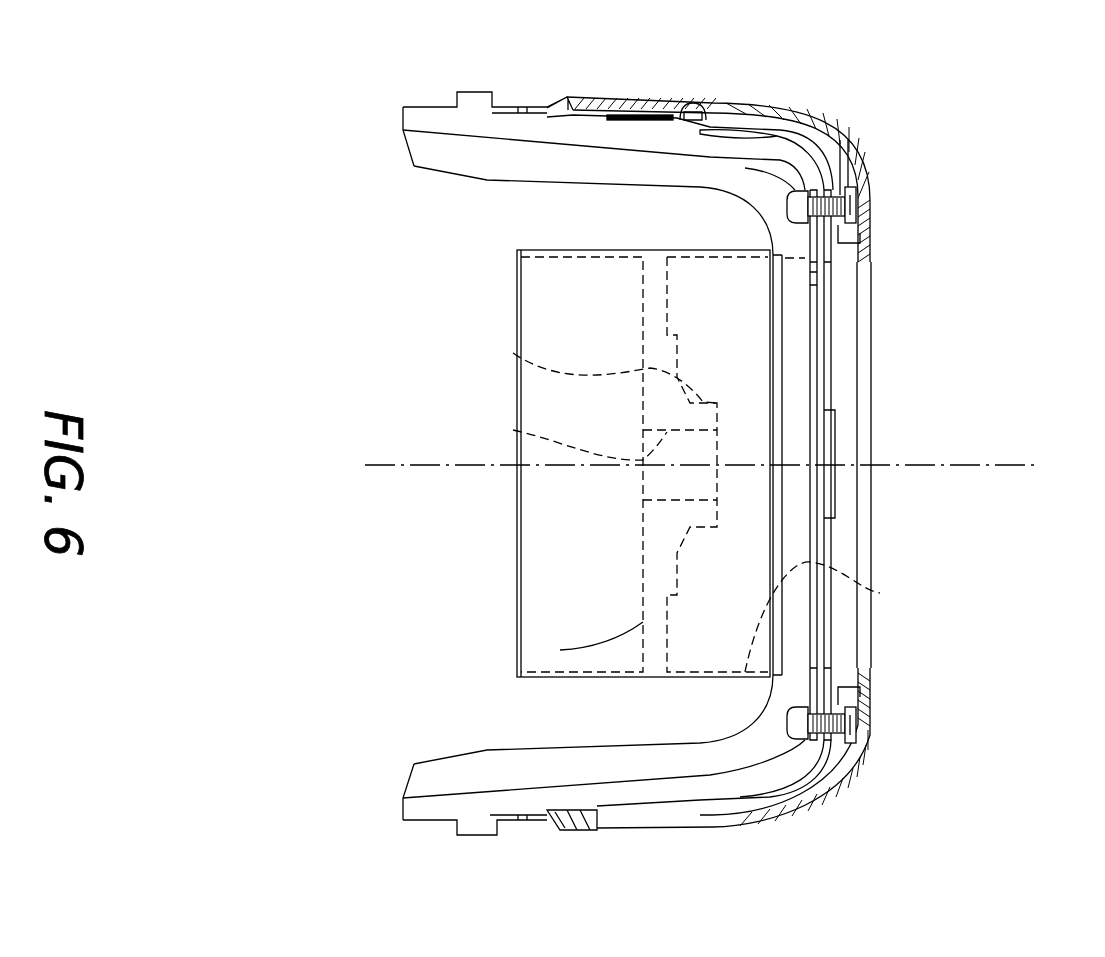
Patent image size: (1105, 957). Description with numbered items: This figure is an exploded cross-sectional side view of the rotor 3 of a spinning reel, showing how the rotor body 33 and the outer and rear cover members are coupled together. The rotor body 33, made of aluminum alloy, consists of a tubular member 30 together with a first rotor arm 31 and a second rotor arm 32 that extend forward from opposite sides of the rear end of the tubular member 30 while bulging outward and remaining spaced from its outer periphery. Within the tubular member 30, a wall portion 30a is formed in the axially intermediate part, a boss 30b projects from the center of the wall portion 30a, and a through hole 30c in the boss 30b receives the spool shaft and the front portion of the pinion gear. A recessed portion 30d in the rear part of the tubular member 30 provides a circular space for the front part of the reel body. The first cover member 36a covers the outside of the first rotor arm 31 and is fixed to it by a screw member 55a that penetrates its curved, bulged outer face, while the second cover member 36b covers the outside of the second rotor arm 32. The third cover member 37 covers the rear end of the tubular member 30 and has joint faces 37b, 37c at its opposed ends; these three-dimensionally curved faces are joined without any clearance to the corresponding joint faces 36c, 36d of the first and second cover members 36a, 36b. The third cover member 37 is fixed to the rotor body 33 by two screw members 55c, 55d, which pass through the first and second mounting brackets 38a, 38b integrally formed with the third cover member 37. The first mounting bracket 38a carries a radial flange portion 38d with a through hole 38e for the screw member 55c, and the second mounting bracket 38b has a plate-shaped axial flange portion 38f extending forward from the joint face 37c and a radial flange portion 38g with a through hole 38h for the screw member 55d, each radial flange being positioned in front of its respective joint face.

The rotor 3 is at (470, 550).
The tubular member 30 is at (513, 240).
The wall portion 30a is at (560, 650).
The boss 30b is at (513, 353).
The through hole 30c is at (513, 430).
The recessed portion 30d is at (880, 593).
The first rotor arm 31 is at (430, 185).
The second rotor arm 32 is at (480, 745).
The rotor body 33 is at (497, 378).
The first cover member 36a is at (725, 105).
The second cover member 36b is at (772, 838).
The joint face 36c is at (845, 242).
The joint face 36d is at (880, 705).
The third cover member 37 is at (846, 690).
The joint face 37b is at (865, 212).
The joint face 37c is at (880, 733).
The first mounting bracket 38a is at (842, 245).
The second mounting bracket 38b is at (880, 653).
The radial flange portion 38d is at (843, 140).
The through hole 38e is at (873, 303).
The axial flange portion 38f is at (880, 694).
The radial flange portion 38g is at (847, 750).
The through hole 38h is at (806, 752).
The screw member 55a is at (695, 105).
The screw member 55c is at (855, 200).
The screw member 55d is at (855, 740).